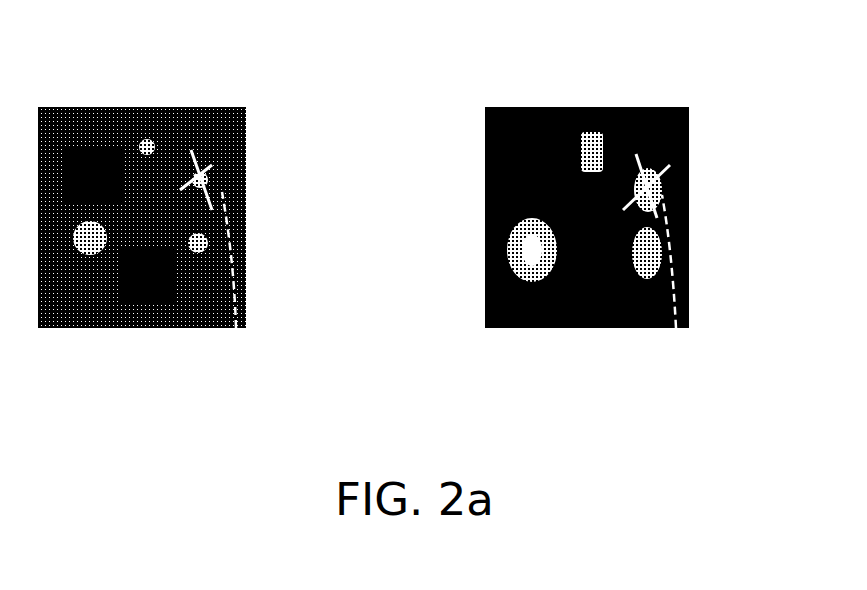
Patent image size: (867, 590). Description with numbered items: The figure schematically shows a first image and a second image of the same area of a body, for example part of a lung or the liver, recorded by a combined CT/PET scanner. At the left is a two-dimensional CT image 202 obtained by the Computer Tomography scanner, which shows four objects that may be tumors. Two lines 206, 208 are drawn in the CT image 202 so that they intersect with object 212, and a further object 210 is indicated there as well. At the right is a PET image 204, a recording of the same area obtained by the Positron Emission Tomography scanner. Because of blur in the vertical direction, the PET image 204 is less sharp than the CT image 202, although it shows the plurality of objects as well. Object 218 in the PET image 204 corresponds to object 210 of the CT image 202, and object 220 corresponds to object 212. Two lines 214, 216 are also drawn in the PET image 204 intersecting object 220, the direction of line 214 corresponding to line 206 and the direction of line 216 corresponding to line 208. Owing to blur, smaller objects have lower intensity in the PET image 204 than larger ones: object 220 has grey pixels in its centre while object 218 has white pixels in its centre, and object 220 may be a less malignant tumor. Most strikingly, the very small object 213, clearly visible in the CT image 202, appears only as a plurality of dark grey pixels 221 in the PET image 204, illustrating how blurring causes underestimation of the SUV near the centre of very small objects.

The CT image 202 is at (53, 107).
The PET image 204 is at (663, 107).
The line 206 is at (192, 151).
The line 208 is at (222, 162).
The object 210 is at (85, 250).
The object 212 is at (236, 328).
The object 213 is at (149, 140).
The line 214 is at (637, 153).
The line 216 is at (668, 162).
The object 218 is at (530, 260).
The object 220 is at (676, 328).
The dark grey pixels 221 is at (590, 132).